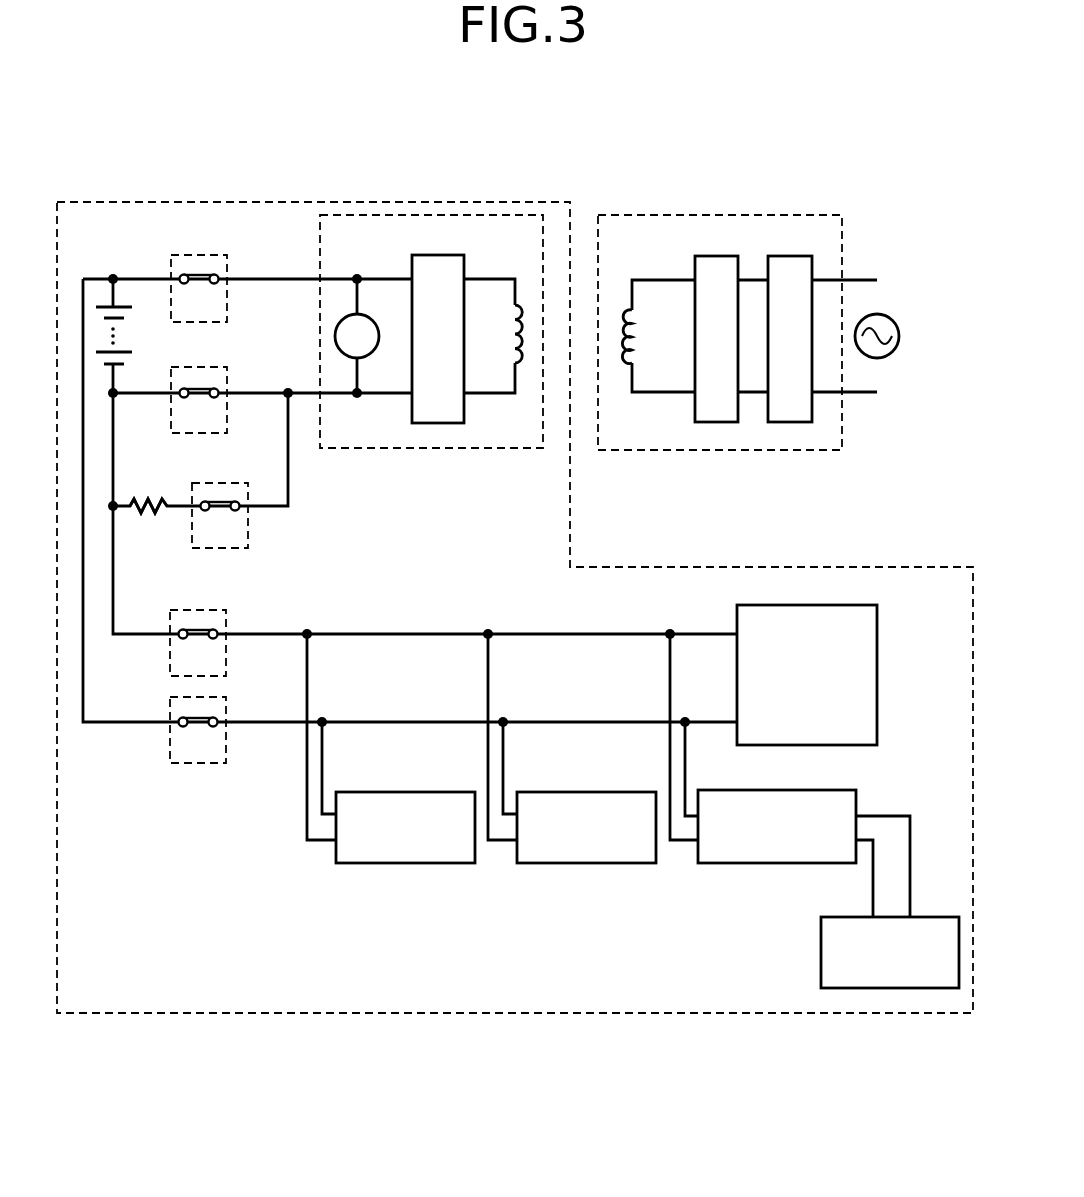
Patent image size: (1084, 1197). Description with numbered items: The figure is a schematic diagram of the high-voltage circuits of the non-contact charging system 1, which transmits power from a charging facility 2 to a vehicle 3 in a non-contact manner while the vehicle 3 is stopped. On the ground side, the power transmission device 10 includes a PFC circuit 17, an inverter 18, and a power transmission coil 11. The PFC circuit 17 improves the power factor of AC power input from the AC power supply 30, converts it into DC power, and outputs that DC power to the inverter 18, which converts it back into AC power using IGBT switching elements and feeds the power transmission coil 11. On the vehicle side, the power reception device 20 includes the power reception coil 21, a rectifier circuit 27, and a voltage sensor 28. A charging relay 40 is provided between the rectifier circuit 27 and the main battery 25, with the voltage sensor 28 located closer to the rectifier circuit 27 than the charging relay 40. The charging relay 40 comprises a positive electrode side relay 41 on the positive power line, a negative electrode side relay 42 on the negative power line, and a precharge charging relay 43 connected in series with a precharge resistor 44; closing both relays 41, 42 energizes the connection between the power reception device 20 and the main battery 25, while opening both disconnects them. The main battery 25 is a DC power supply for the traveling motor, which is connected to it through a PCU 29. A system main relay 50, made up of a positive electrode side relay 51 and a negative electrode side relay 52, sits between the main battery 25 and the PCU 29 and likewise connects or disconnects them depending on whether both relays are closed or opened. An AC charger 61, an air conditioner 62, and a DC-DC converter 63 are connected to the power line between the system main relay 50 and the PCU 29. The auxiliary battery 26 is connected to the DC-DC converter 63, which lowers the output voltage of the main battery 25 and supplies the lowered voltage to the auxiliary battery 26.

The non-contact charging system 1 is at (826, 114).
The charging facility 2 is at (666, 154).
The vehicle 3 is at (131, 201).
The power transmission device 10 is at (843, 237).
The power transmission coil 11 is at (626, 308).
The PFC circuit 17 is at (792, 256).
The inverter 18 is at (720, 256).
The power reception device 20 is at (440, 449).
The power reception coil 21 is at (517, 305).
The main battery 25 is at (129, 306).
The auxiliary battery 26 is at (821, 957).
The rectifier circuit 27 is at (440, 255).
The voltage sensor 28 is at (366, 315).
The PCU 29 is at (878, 677).
The AC power supply 30 is at (899, 338).
The charging relay 40 is at (207, 240).
The positive electrode side relay 41 is at (200, 323).
The negative electrode side relay 42 is at (200, 434).
The precharge charging relay 43 is at (249, 520).
The precharge resistor 44 is at (156, 512).
The system main relay 50 is at (210, 790).
The positive electrode side relay 51 is at (227, 660).
The negative electrode side relay 52 is at (227, 748).
The AC charger 61 is at (404, 792).
The air conditioner 62 is at (588, 792).
The DC-DC converter 63 is at (793, 790).